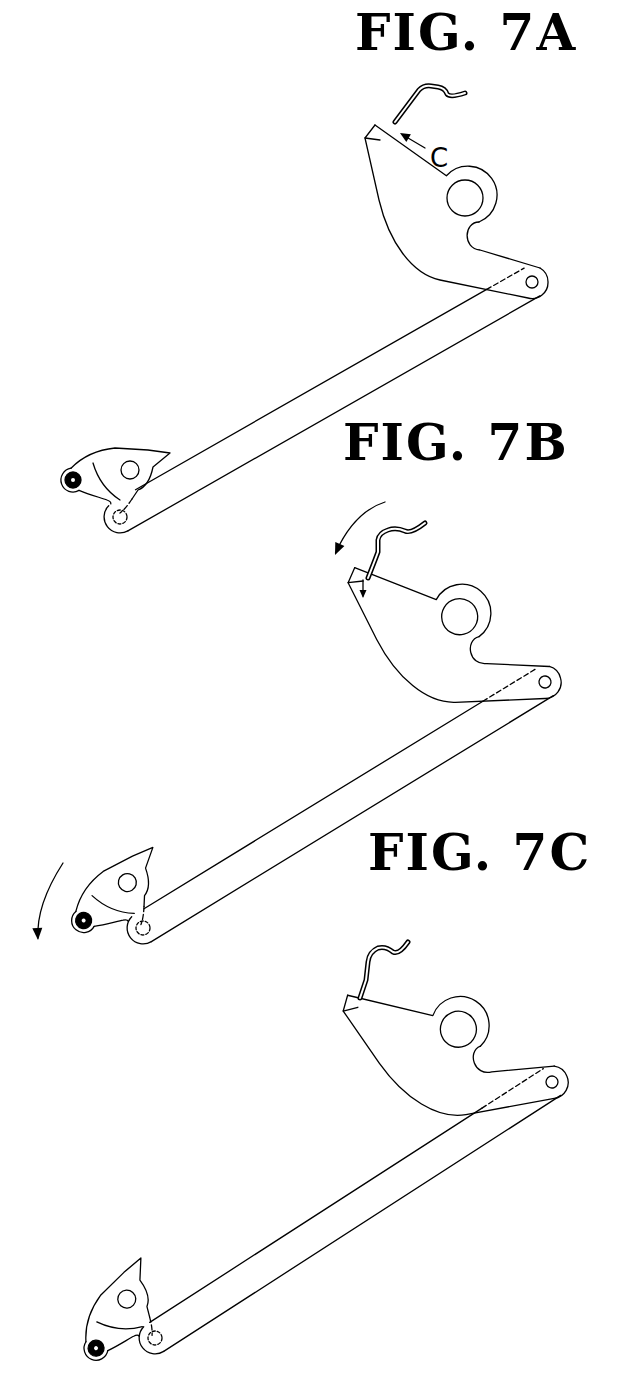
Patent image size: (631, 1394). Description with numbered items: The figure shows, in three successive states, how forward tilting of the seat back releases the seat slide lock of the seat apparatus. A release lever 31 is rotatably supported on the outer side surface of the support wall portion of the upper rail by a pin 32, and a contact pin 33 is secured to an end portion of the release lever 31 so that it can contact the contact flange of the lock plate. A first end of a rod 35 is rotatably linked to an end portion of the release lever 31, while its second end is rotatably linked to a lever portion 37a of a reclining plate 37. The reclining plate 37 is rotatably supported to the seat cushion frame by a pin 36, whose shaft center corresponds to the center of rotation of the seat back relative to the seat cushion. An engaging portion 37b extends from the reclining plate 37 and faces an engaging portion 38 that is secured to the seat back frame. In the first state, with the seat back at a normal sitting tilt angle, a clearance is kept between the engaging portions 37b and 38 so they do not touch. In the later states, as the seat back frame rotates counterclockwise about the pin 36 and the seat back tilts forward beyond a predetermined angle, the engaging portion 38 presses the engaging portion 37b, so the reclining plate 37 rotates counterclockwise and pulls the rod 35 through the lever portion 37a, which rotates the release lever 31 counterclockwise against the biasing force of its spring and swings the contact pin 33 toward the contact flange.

In FIG. 7A, the release lever 31 is at (119, 463).
In FIG. 7B, the release lever 31 is at (111, 875).
In FIG. 7C, the release lever 31 is at (105, 1292).
In FIG. 7A, the pin 32 is at (129, 445).
In FIG. 7B, the pin 32 is at (154, 867).
In FIG. 7C, the pin 32 is at (149, 1277).
In FIG. 7A, the contact pin 33 is at (56, 464).
In FIG. 7B, the contact pin 33 is at (78, 951).
In FIG. 7C, the contact pin 33 is at (83, 1324).
In FIG. 7A, the rod 35 is at (322, 397).
In FIG. 7B, the rod 35 is at (332, 807).
In FIG. 7C, the rod 35 is at (335, 1220).
In FIG. 7A, the pin 36 is at (498, 194).
In FIG. 7B, the pin 36 is at (479, 596).
In FIG. 7C, the pin 36 is at (472, 1004).
In FIG. 7A, the reclining plate 37 is at (430, 212).
In FIG. 7B, the reclining plate 37 is at (440, 636).
In FIG. 7C, the reclining plate 37 is at (431, 1054).
In FIG. 7A, the lever portion 37a is at (508, 238).
In FIG. 7B, the lever portion 37a is at (513, 647).
In FIG. 7C, the lever portion 37a is at (514, 1051).
In FIG. 7A, the engaging portion 37b is at (336, 121).
In FIG. 7B, the engaging portion 37b is at (401, 575).
In FIG. 7C, the engaging portion 37b is at (395, 995).
In FIG. 7A, the engaging portion 38 is at (466, 94).
In FIG. 7B, the engaging portion 38 is at (420, 523).
In FIG. 7C, the engaging portion 38 is at (398, 943).